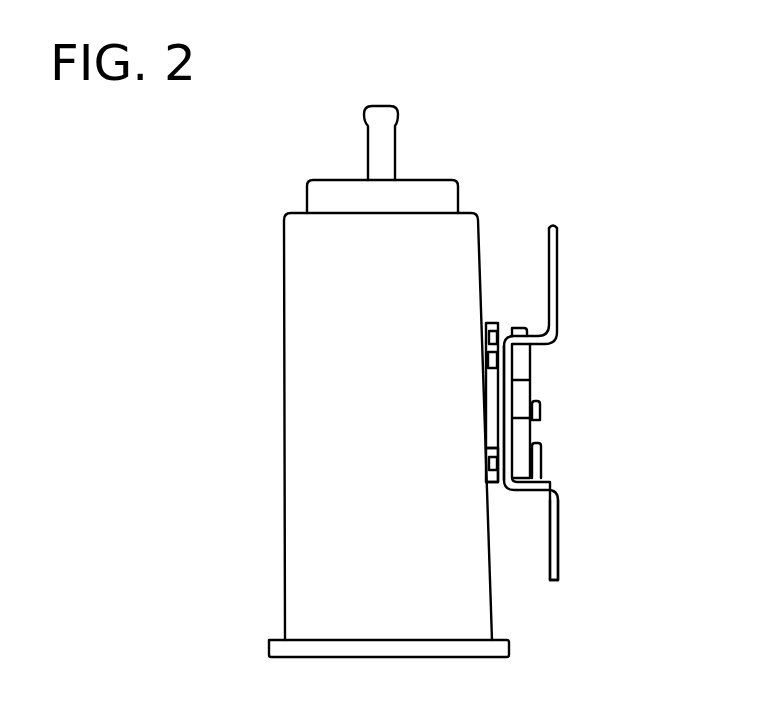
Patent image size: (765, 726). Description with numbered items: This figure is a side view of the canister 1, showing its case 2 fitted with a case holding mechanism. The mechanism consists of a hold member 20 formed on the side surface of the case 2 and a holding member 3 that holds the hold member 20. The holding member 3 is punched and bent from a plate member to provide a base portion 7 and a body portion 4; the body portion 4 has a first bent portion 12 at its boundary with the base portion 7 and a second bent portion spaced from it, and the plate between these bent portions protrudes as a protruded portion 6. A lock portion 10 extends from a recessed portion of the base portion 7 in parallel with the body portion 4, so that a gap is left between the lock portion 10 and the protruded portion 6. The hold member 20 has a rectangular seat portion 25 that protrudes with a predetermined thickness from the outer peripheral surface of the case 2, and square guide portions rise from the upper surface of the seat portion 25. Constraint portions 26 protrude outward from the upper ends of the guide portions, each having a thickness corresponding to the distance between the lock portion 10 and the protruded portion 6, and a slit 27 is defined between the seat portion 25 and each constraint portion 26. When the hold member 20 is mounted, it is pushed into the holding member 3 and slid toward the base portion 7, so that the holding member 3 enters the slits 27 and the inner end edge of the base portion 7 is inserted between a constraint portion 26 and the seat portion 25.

The canister 1 is at (265, 129).
The case 2 is at (282, 339).
The holding member 3 is at (559, 283).
The body portion 4 is at (499, 448).
The protruded portion 6 is at (504, 368).
The base portion 7 is at (558, 533).
The lock portion 10 is at (541, 446).
The first bent portion 12 is at (541, 419).
The hold member 20 is at (492, 316).
The seat portion 25 is at (499, 484).
The constraint portion 26 is at (530, 362).
The slit 27 is at (511, 326).